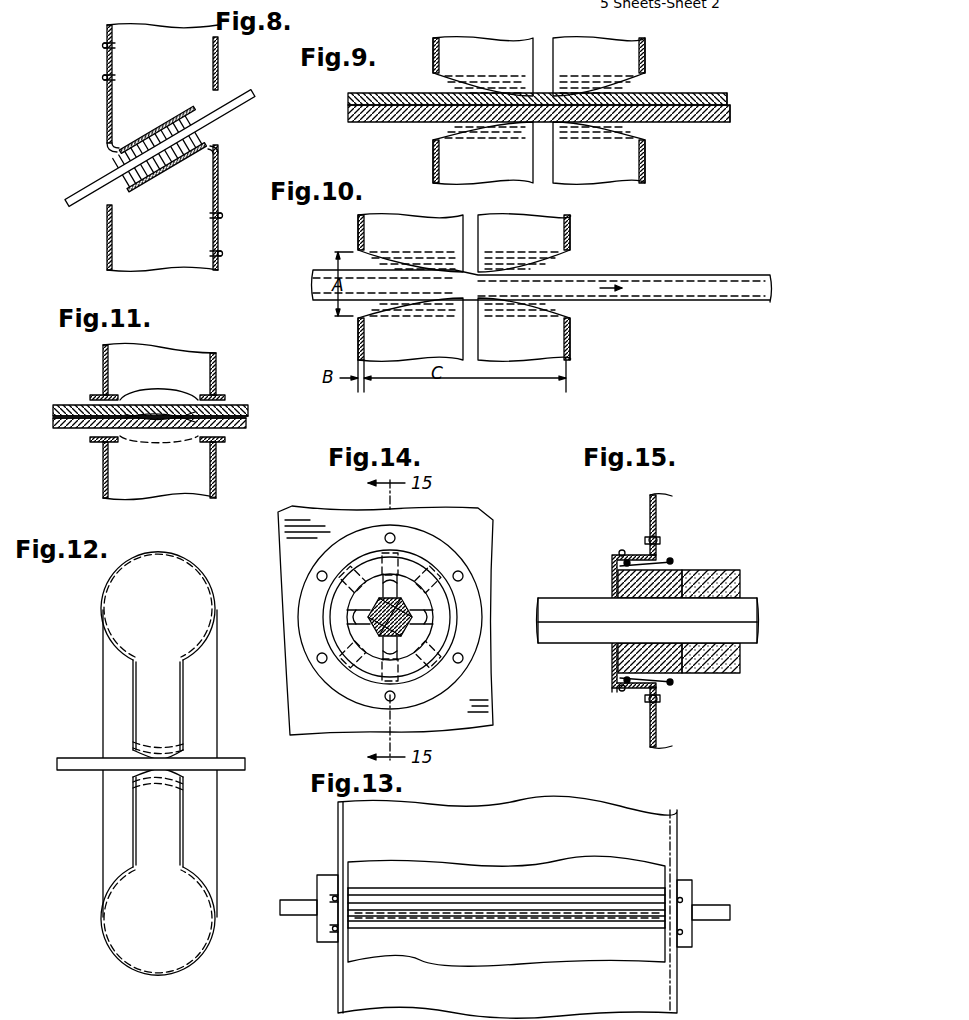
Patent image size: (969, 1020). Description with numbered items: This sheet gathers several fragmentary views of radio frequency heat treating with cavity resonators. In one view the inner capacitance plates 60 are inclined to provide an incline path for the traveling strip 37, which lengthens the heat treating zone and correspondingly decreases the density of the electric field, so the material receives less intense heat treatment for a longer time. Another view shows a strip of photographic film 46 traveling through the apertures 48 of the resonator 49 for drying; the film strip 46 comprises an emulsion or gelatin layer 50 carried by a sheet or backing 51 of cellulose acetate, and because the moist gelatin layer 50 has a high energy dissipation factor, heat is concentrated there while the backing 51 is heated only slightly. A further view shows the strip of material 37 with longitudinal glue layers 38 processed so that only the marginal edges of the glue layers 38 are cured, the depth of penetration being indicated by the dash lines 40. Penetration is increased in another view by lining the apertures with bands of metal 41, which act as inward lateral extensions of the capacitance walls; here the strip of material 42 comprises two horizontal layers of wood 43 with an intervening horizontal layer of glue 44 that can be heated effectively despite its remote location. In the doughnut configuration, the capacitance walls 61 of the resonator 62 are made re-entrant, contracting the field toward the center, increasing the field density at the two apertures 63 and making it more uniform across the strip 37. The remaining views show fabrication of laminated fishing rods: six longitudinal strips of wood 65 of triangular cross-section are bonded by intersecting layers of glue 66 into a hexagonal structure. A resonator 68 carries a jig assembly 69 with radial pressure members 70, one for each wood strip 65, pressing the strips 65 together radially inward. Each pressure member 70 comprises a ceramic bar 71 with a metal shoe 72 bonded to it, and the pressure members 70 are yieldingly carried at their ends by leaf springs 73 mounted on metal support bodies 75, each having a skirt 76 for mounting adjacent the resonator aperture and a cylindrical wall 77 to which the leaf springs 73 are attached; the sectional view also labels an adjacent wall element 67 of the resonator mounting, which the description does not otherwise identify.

In FIG. 8, the strip of material 37 is at (246, 103).
In FIG. 10, the strip of material 37 is at (752, 272).
In FIG. 12, the strip of material 37 is at (235, 757).
In FIG. 10, the longitudinal glue layers 38 is at (725, 297).
In FIG. 10, the dash lines 40 is at (688, 272).
In FIG. 11, the bands of metal 41 is at (118, 398).
In FIG. 11, the strip of material 42 is at (171, 410).
In FIG. 11, the horizontal layers of wood 43 is at (240, 400).
In FIG. 11, the horizontal layer of glue 44 is at (163, 428).
In FIG. 9, the strip of photographic film 46 is at (551, 120).
In FIG. 9, the apertures 48 is at (643, 75).
In FIG. 9, the resonator 49 is at (430, 154).
In FIG. 9, the emulsion or gelatin layer 50 is at (700, 120).
In FIG. 9, the sheet or backing 51 is at (680, 122).
In FIG. 8, the inner capacitance plates 60 is at (167, 103).
In FIG. 12, the capacitance walls 61 is at (185, 715).
In FIG. 12, the resonator 62 is at (213, 580).
In FIG. 12, the apertures 63 is at (130, 752).
In FIG. 14, the longitudinal strips of wood 65 is at (395, 620).
In FIG. 8, the intersecting layers of glue 66 is at (163, 170).
In FIG. 14, the intersecting layers of glue 66 is at (500, 590).
In FIG. 15, the mounting plate 67 is at (648, 722).
In FIG. 13, the resonator 68 is at (655, 840).
In FIG. 14, the jig assembly 69 is at (465, 656).
In FIG. 15, the jig assembly 69 is at (615, 552).
In FIG. 13, the jig assembly 69 is at (695, 888).
In FIG. 14, the radial pressure members 70 is at (400, 605).
In FIG. 15, the radial pressure members 70 is at (720, 570).
In FIG. 13, the radial pressure members 70 is at (544, 892).
In FIG. 15, the ceramic bar 71 is at (720, 673).
In FIG. 15, the metal shoe 72 is at (618, 590).
In FIG. 15, the leaf springs 73 is at (660, 565).
In FIG. 15, the support bodies 75 is at (617, 686).
In FIG. 15, the skirt 76 is at (660, 697).
In FIG. 15, the cylindrical wall 77 is at (620, 690).